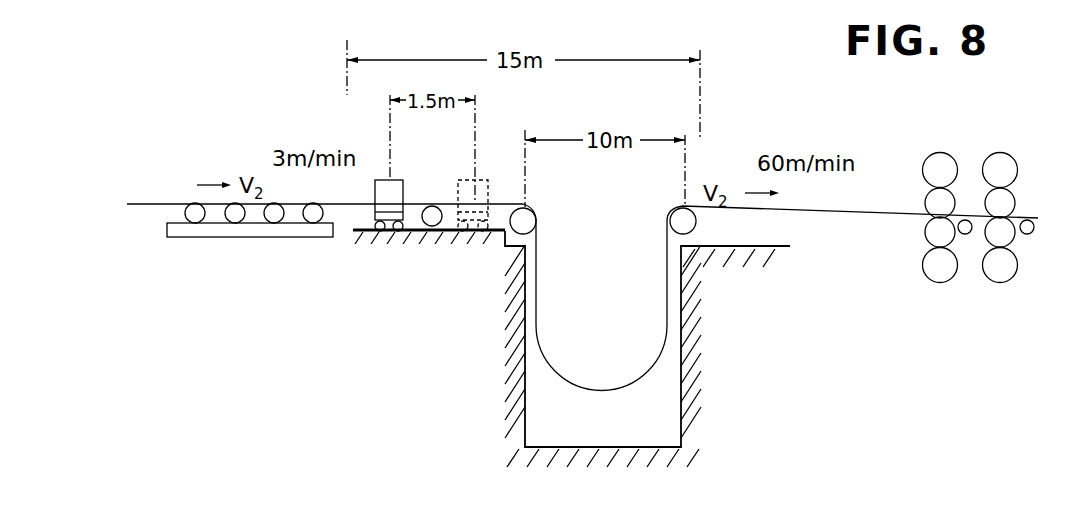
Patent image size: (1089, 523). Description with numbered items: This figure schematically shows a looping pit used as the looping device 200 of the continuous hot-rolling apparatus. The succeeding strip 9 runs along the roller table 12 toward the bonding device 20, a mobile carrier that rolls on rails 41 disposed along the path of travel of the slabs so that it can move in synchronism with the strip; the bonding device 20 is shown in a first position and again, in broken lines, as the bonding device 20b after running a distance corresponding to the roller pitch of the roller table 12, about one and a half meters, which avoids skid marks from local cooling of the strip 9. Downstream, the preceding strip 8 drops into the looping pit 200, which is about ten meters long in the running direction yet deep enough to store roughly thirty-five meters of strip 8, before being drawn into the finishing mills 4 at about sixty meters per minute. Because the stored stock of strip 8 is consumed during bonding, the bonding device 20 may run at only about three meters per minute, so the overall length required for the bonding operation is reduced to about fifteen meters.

The finishing mills 4 is at (1028, 136).
The preceding slab 8 is at (843, 217).
The succeeding slab 9 is at (150, 204).
The roller table 12 is at (265, 238).
The bonding device 20 is at (391, 166).
The welding carriage (advanced position) 20b is at (473, 205).
The rails 41 is at (415, 235).
The looping device 200 is at (650, 427).